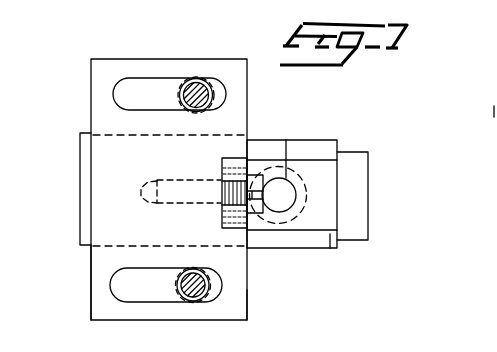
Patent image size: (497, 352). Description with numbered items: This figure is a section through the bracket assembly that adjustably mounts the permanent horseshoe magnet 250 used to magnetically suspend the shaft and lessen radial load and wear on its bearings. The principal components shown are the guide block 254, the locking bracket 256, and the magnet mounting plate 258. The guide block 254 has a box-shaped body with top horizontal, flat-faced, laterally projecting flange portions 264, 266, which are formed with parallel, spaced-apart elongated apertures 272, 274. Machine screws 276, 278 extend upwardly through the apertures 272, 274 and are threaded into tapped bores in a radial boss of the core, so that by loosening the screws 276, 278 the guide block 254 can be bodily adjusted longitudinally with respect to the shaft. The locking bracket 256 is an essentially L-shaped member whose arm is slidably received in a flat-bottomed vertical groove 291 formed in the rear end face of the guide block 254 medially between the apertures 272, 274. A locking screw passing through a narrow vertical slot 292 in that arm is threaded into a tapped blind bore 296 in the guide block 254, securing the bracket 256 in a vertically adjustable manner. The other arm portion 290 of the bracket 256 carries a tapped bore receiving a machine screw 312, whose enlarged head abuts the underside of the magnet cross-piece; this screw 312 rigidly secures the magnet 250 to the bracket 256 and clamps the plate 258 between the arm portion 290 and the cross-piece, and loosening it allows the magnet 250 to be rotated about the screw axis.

The permanent horseshoe magnet 250 is at (369, 187).
The guide block 254 is at (248, 306).
The locking bracket 256 is at (330, 232).
The magnet mounting plate 258 is at (328, 145).
The flange portion 264 is at (106, 59).
The flange portion 266 is at (91, 278).
The elongated aperture 272 is at (158, 81).
The elongated aperture 274 is at (132, 297).
The machine screw 276 is at (198, 86).
The machine screw 278 is at (208, 291).
The arm portion 290 is at (308, 223).
The vertical groove 291 is at (236, 227).
The vertical slot 292 is at (221, 196).
The tapped blind bore 296 is at (300, 199).
The machine screw 312 is at (287, 140).